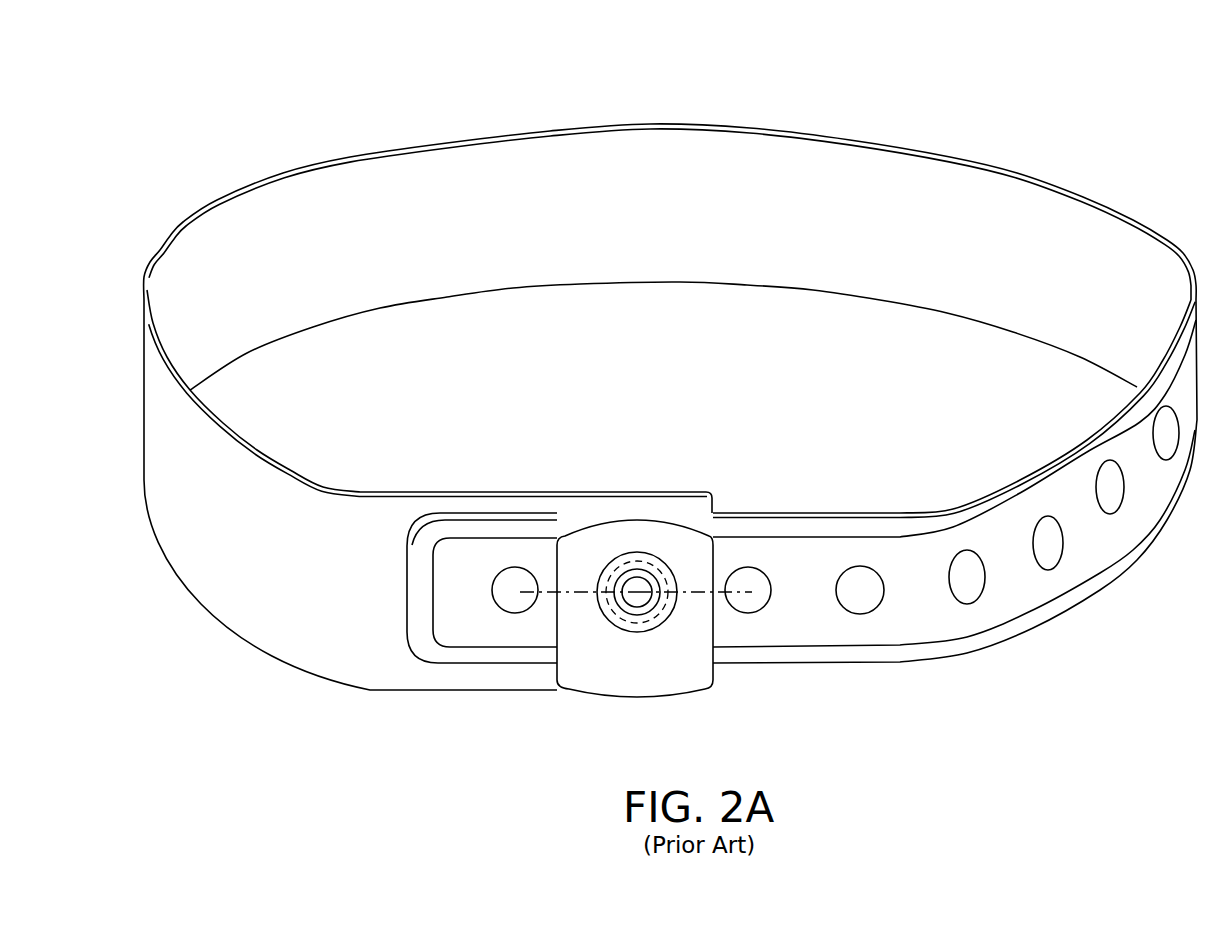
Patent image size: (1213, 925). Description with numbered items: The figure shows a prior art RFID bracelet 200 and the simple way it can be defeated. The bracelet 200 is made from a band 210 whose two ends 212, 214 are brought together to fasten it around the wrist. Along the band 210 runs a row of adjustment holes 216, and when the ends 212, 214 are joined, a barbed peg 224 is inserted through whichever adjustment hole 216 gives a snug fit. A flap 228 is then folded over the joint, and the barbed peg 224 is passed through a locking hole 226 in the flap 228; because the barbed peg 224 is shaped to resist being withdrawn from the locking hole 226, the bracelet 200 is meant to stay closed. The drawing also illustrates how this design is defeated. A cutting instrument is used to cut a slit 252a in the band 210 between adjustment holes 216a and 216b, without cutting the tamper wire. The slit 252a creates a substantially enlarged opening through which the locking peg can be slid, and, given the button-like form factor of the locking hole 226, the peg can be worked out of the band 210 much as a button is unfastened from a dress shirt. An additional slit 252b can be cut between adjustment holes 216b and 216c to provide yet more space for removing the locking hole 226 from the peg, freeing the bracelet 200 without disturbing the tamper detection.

The RFID bracelet 200 is at (816, 68).
The band 210 is at (447, 256).
The end 212 is at (525, 491).
The end 214 is at (430, 655).
The adjustment hole 216 is at (968, 604).
The adjustment hole 216a is at (498, 575).
The adjustment hole 216b is at (644, 608).
The adjustment hole 216c is at (764, 574).
The barbed peg 224 is at (645, 585).
The locking hole 226 is at (636, 552).
The flap 228 is at (663, 700).
The slit 252a is at (585, 596).
The slit 252b is at (688, 594).